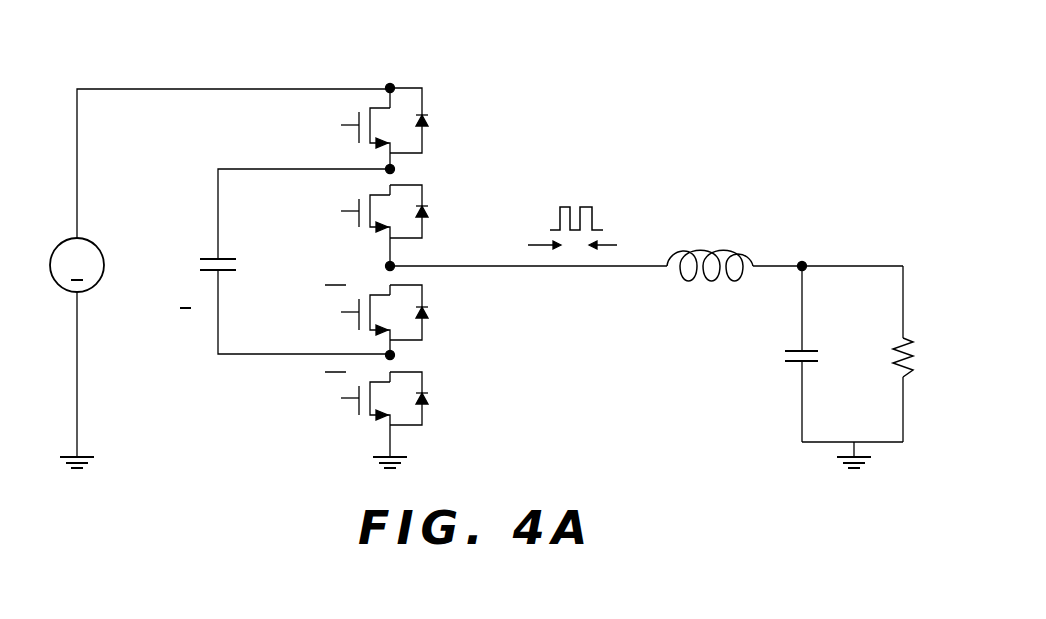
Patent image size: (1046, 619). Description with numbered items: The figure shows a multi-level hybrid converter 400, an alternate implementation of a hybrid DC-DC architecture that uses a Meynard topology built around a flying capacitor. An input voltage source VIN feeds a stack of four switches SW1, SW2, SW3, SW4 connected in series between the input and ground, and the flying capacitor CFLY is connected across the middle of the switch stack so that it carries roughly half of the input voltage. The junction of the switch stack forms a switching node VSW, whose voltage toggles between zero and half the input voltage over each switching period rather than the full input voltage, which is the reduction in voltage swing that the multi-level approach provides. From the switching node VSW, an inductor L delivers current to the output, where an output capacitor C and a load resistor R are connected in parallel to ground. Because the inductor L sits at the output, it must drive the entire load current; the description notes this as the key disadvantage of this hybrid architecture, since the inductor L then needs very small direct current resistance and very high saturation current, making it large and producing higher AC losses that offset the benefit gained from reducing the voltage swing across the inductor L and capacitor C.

The multi-level hybrid converter 400 is at (113, 45).
The input voltage source VIN is at (198, 278).
The flying capacitor CFLY is at (268, 261).
The first switch SW1 is at (398, 128).
The second switch SW2 is at (398, 225).
The third switch SW3 is at (397, 320).
The fourth switch SW4 is at (397, 420).
The switching node VSW is at (528, 220).
The inductor L is at (710, 255).
The output capacitor C is at (792, 354).
The load resistor R is at (891, 354).